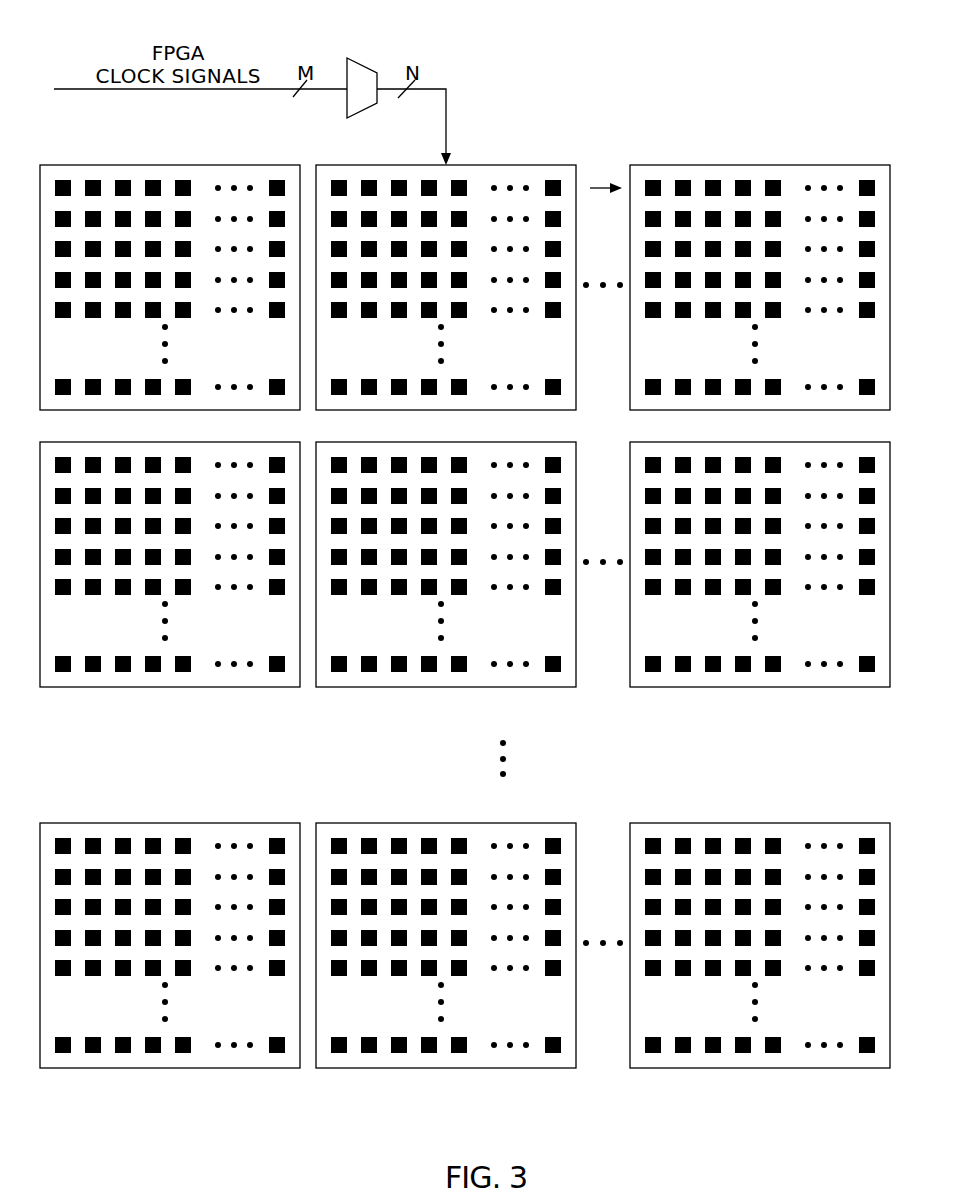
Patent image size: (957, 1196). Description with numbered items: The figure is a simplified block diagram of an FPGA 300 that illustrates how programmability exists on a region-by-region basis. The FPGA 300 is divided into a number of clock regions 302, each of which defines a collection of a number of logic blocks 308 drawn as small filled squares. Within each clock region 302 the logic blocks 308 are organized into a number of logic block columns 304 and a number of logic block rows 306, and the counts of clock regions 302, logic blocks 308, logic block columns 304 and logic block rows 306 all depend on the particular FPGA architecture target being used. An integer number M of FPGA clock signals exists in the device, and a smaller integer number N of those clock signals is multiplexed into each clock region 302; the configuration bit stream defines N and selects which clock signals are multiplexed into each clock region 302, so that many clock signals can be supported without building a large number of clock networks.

The FPGA 300 is at (799, 99).
The clock region 302 is at (239, 165).
The logic block column 304 is at (653, 140).
The logic block row 306 is at (608, 175).
The logic block 308 is at (65, 177).